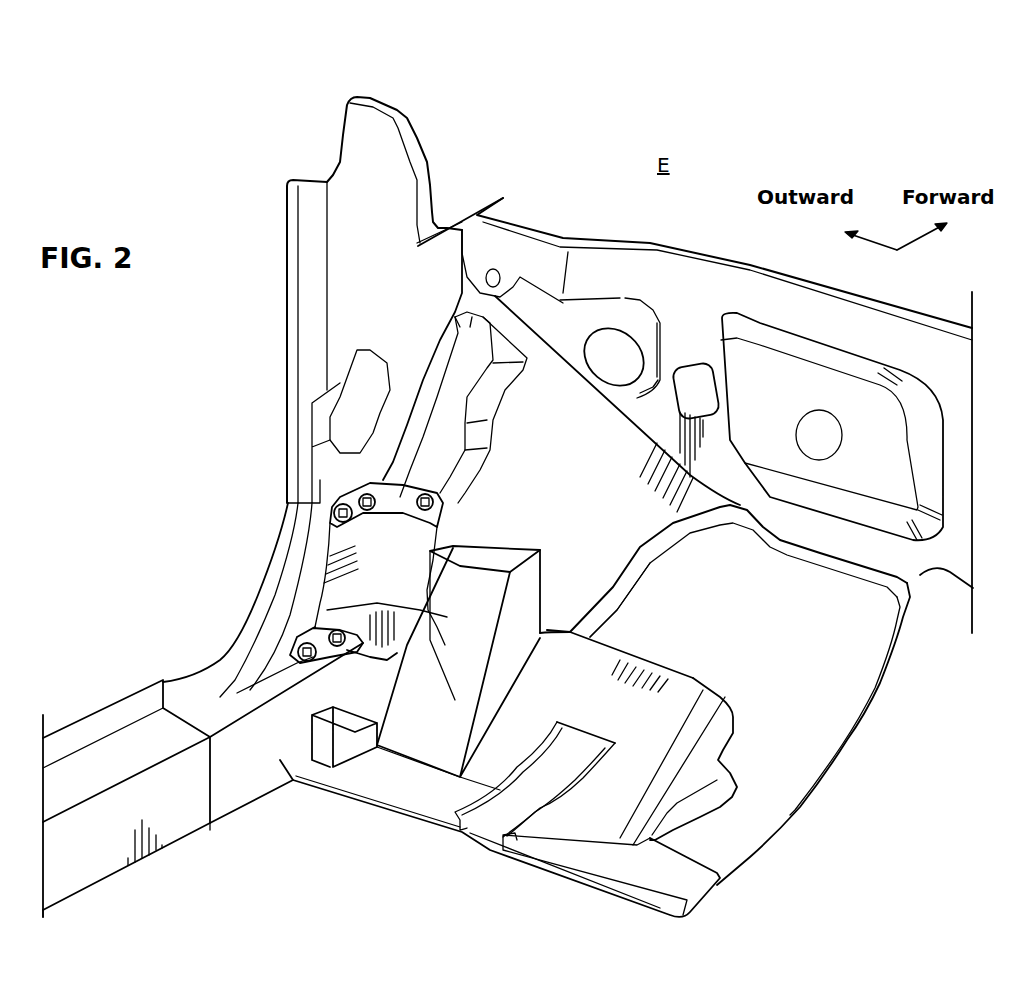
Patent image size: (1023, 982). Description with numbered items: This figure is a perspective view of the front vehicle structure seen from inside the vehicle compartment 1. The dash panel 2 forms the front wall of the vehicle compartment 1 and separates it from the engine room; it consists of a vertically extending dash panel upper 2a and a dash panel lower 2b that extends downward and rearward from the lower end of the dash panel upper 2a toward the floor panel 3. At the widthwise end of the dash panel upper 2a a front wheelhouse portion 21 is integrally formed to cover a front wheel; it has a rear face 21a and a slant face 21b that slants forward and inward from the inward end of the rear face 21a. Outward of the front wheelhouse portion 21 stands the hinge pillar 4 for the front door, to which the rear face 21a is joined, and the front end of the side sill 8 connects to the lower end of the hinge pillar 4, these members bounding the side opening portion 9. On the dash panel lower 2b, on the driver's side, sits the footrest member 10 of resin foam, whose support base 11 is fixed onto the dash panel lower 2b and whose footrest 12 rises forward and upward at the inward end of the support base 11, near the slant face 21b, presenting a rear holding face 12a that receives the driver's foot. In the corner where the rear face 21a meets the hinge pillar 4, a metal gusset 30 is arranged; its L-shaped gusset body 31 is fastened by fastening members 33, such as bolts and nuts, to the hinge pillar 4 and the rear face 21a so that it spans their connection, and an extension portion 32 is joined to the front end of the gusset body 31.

The vehicle compartment 1 is at (197, 870).
The dash panel 2 is at (977, 683).
The dash panel upper 2a is at (905, 560).
The dash panel lower 2b is at (850, 672).
The floor panel 3 is at (282, 842).
The hinge pillar 4 is at (313, 342).
The side sill 8 is at (138, 735).
The side opening portion 9 is at (260, 431).
The footrest member 10 is at (693, 679).
The support base 11 is at (597, 663).
The footrest 12 is at (510, 657).
The holding face 12a is at (423, 735).
The front wheelhouse portion 21 is at (630, 520).
The rear face 21a is at (463, 373).
The slant face 21b is at (600, 543).
The gusset 30 is at (318, 612).
The gusset body 31 is at (345, 548).
The extension portion 32 is at (483, 540).
The fastening members 33 is at (365, 497).